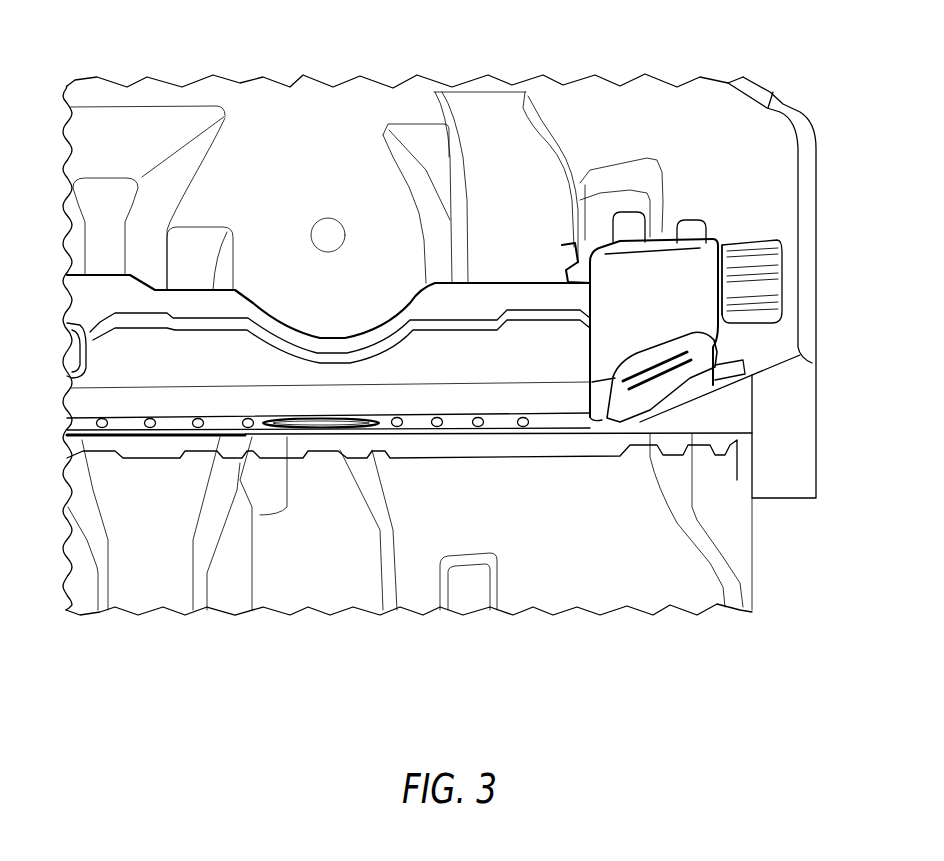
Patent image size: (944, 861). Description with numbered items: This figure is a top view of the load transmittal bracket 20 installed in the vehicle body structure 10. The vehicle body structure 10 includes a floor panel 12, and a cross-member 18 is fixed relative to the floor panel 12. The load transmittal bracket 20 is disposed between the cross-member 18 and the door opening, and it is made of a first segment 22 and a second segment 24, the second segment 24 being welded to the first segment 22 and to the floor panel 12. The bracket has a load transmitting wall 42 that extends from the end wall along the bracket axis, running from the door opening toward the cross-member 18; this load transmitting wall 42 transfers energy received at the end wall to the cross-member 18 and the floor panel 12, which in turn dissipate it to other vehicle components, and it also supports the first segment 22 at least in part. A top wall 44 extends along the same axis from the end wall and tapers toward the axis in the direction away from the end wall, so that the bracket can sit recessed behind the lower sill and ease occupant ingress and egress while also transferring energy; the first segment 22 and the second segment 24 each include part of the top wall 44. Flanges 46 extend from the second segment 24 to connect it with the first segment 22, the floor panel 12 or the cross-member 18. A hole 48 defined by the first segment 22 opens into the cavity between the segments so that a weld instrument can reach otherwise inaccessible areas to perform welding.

The vehicle body structure 10 is at (457, 313).
The floor panel 12 is at (338, 562).
The cross-member 18 is at (402, 363).
The load transmittal bracket 20 is at (681, 298).
The first segment 22 is at (708, 247).
The second segment 24 is at (617, 398).
The load transmitting wall 42 is at (660, 228).
The top wall 44 is at (608, 270).
The flanges 46 is at (578, 263).
The hole 48 is at (680, 367).